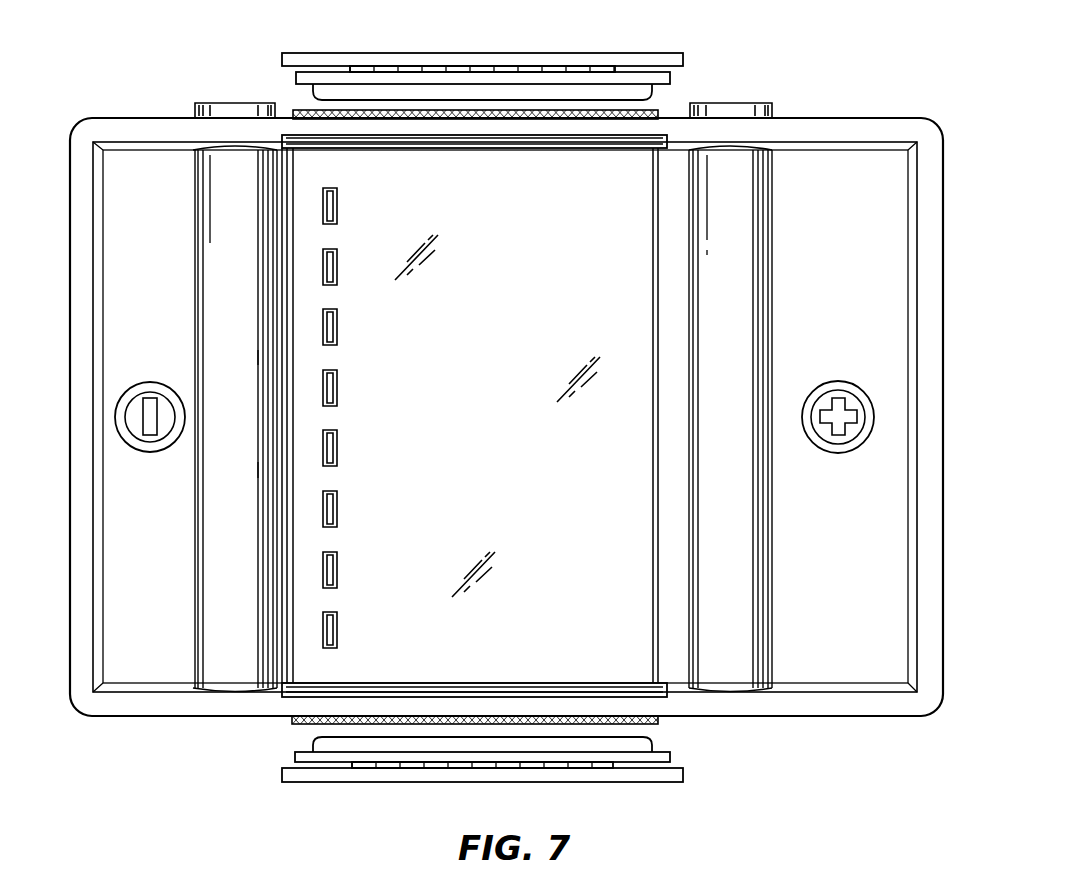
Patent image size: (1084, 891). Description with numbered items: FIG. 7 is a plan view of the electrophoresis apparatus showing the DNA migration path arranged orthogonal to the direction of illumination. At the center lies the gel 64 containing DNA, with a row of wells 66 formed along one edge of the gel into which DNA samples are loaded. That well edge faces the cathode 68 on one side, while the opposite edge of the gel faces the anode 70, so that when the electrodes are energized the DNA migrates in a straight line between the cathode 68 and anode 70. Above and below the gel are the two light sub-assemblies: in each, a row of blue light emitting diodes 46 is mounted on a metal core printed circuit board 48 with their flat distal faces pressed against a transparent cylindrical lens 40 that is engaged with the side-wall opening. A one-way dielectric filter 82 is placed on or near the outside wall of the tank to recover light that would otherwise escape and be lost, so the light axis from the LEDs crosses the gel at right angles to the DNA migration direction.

The transparent cylindrical lens 40 is at (323, 743).
The light emitting diodes 46 is at (410, 768).
The metal core printed circuit board 48 is at (317, 785).
The gel 64 is at (608, 300).
The wells 66 is at (320, 327).
The cathode 68 is at (227, 273).
The anode 70 is at (738, 320).
The one-way dielectric filter 82 is at (646, 112).